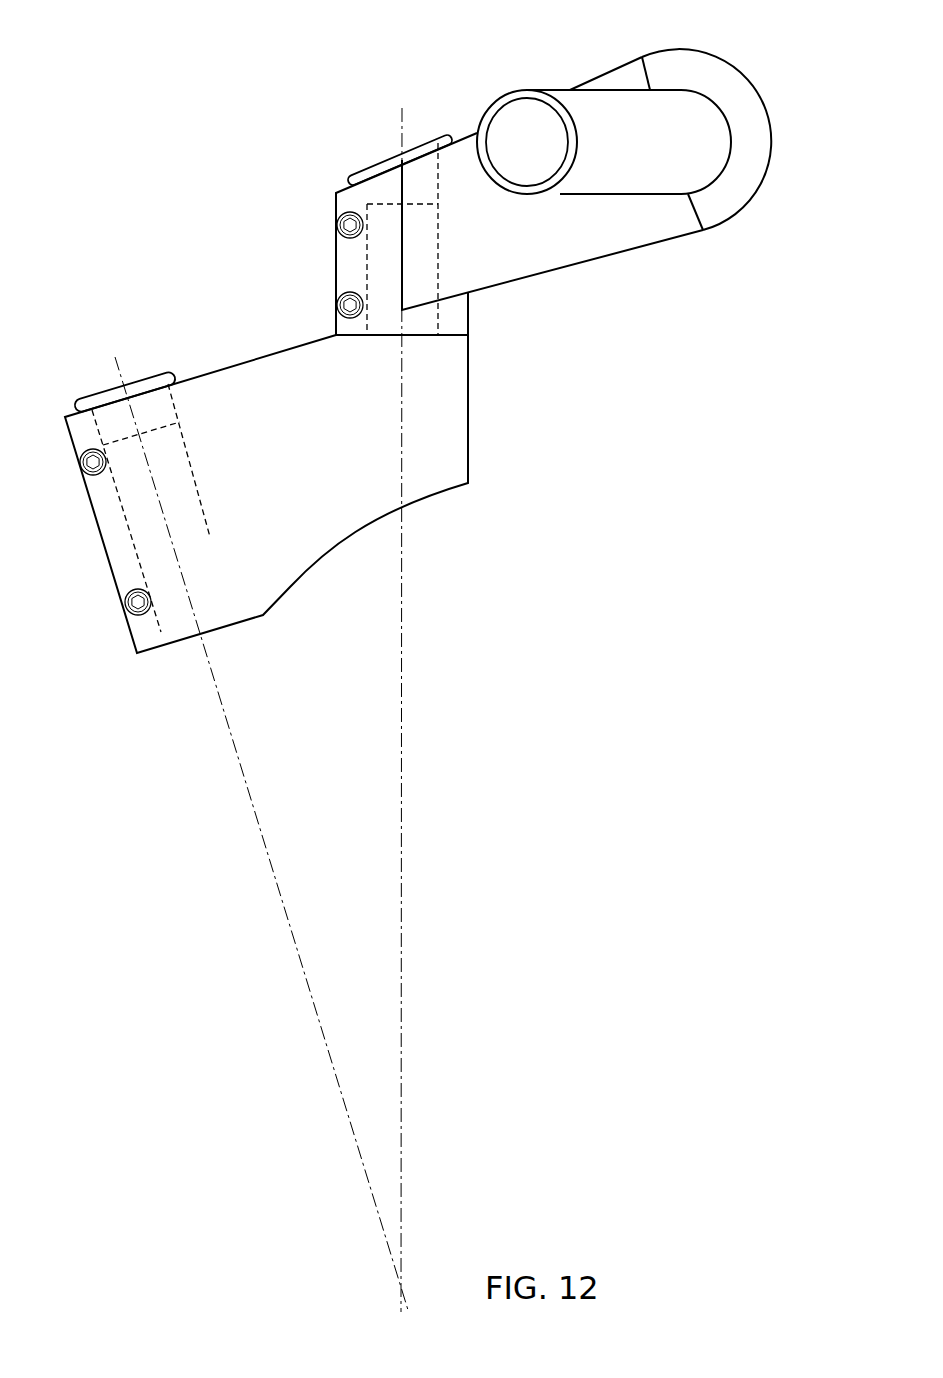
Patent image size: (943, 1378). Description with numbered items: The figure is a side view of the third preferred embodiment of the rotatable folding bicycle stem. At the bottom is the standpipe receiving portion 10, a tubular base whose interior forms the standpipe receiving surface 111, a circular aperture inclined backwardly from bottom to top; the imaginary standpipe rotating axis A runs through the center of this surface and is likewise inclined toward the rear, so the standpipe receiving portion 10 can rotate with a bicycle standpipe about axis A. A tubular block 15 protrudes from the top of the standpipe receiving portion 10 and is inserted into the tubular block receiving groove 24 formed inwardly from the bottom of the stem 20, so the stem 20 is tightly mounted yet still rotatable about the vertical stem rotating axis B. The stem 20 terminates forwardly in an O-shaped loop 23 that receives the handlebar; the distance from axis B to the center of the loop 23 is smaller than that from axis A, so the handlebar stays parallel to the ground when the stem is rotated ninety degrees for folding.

The standpipe receiving portion 10 is at (490, 452).
The standpipe receiving surface 111 is at (160, 630).
The tubular block 15 is at (368, 262).
The stem 20 is at (630, 280).
The O-shaped loop 23 is at (717, 73).
The tubular block receiving groove 24 is at (438, 288).
The standpipe rotating axis A is at (258, 820).
The stem rotating axis B is at (402, 778).